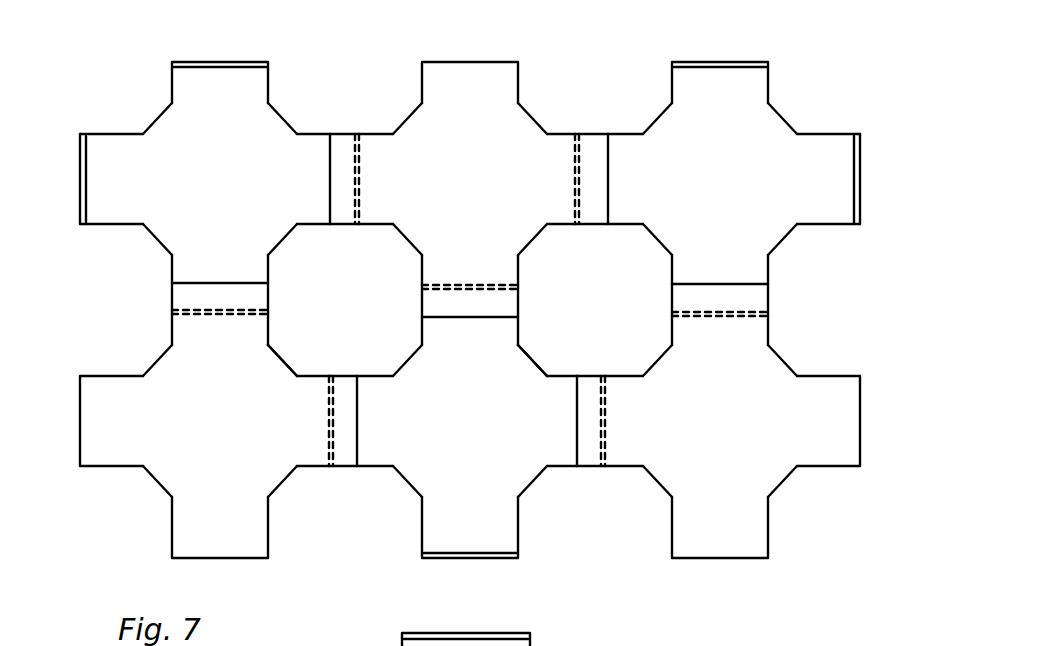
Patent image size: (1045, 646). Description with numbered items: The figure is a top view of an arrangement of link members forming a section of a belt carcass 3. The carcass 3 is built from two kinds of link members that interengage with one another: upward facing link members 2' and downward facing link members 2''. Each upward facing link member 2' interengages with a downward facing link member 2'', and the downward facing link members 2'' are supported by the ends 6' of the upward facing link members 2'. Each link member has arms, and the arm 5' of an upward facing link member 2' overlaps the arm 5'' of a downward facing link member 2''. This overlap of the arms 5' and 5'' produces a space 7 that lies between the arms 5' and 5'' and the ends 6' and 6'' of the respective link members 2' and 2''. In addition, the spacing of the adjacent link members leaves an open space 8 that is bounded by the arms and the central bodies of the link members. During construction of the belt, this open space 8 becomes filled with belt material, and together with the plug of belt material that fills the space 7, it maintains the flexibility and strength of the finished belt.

The carcass 3 is at (552, 62).
The upward facing link member 2' is at (493, 293).
The downward facing link member 2'' is at (494, 293).
The arm of upward facing link member 5' is at (463, 300).
The arm of downward facing link member 5'' is at (440, 300).
The end of upward facing link member 6' is at (473, 300).
The end of downward facing link member 6'' is at (470, 300).
The space 7 is at (343, 130).
The open space 8 is at (312, 338).